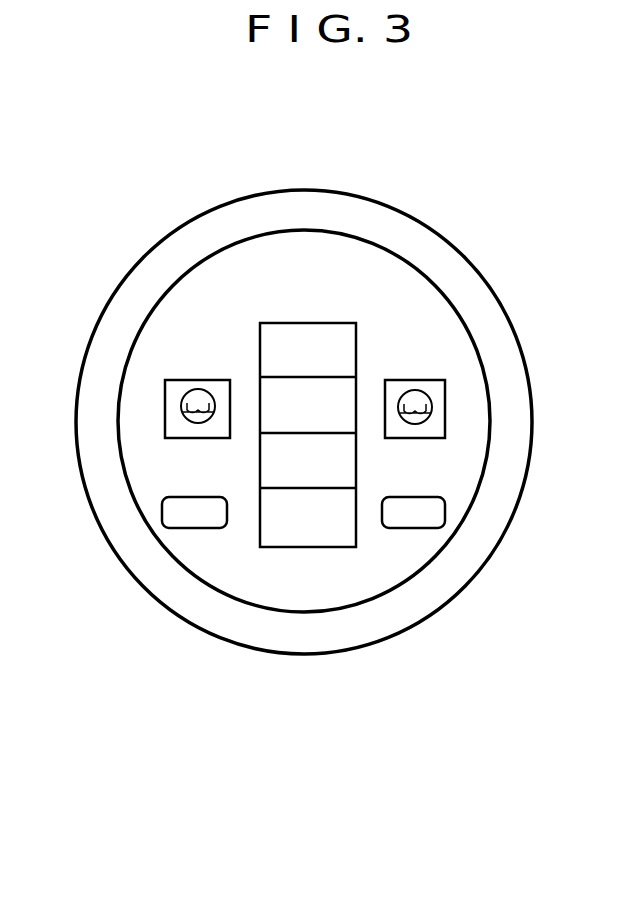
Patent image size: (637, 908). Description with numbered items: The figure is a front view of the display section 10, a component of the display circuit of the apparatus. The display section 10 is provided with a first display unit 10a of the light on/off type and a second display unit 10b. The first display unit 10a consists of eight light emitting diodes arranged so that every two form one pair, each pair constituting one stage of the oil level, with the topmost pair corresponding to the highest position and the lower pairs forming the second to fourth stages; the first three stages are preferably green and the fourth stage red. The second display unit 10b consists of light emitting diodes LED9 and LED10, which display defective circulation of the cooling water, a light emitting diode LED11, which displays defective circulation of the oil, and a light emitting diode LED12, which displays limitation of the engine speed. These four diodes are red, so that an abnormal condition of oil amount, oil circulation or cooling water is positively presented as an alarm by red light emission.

The display section 10 is at (435, 138).
The first display unit 10a is at (343, 330).
The second display unit 10b is at (173, 392).
The light emitting diode LED9 is at (414, 432).
The light emitting diode LED10 is at (202, 438).
The light emitting diode LED11 is at (396, 528).
The light emitting diode LED12 is at (200, 528).